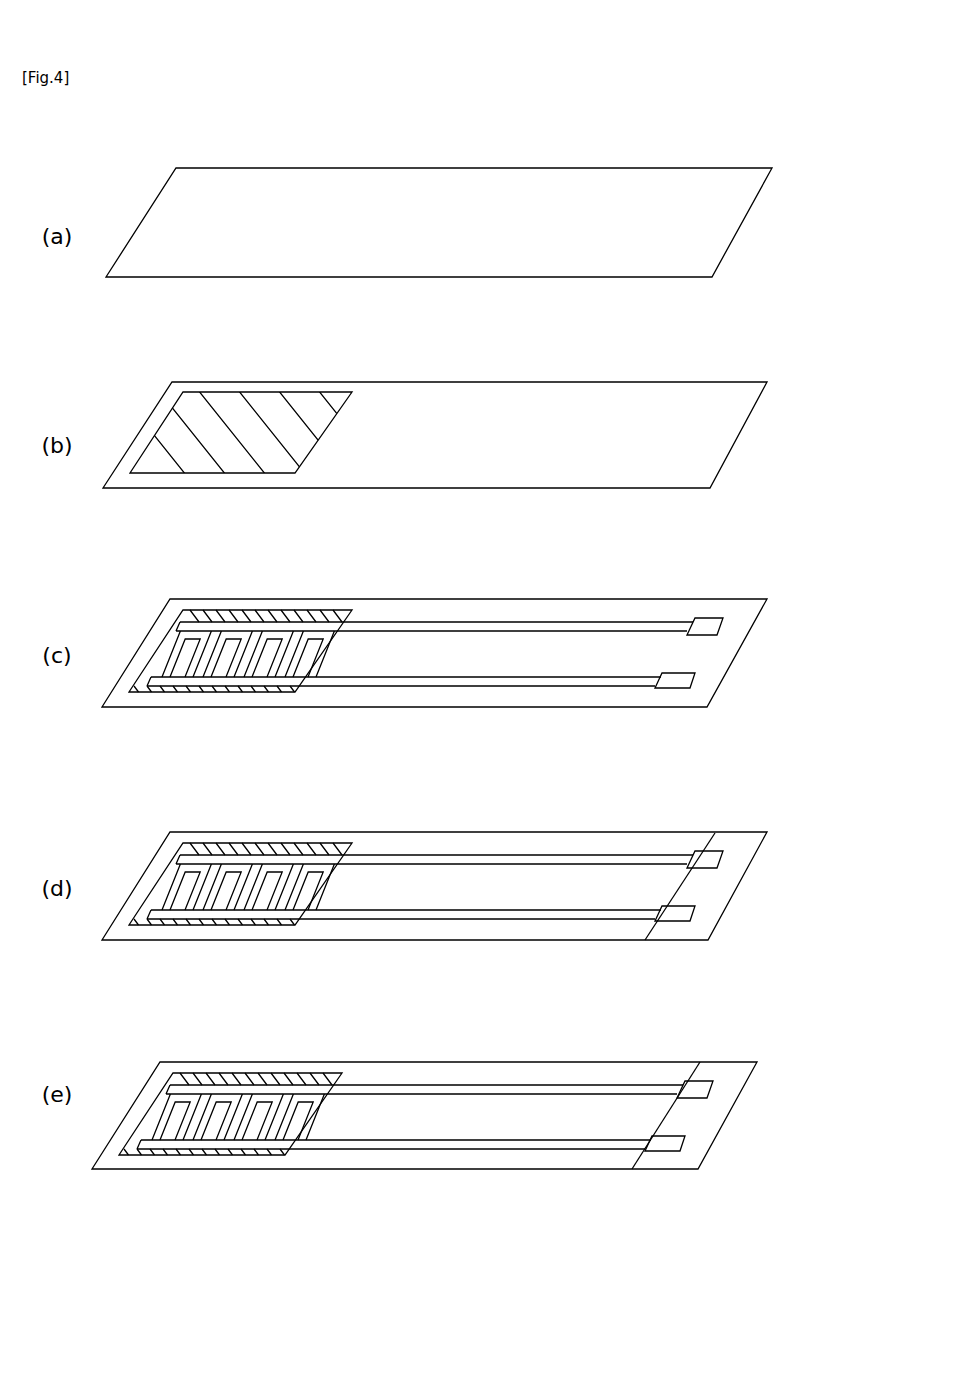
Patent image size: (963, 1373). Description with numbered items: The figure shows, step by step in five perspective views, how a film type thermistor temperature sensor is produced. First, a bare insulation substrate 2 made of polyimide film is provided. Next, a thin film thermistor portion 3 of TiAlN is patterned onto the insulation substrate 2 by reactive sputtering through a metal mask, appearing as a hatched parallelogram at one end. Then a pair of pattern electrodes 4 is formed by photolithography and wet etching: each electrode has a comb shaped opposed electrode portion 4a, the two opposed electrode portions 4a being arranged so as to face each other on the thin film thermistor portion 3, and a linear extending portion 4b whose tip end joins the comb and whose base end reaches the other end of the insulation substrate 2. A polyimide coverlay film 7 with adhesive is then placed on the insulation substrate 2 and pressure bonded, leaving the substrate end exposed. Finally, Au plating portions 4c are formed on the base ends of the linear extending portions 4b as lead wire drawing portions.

The insulation substrate 2 is at (686, 168).
The thin film thermistor portion 3 is at (270, 392).
The pattern electrodes 4 is at (428, 896).
The opposed electrode portions 4a is at (156, 647).
The linear extending portions 4b is at (527, 620).
The plating portion 4c is at (692, 1093).
The polyimide coverlay film 7 is at (713, 833).